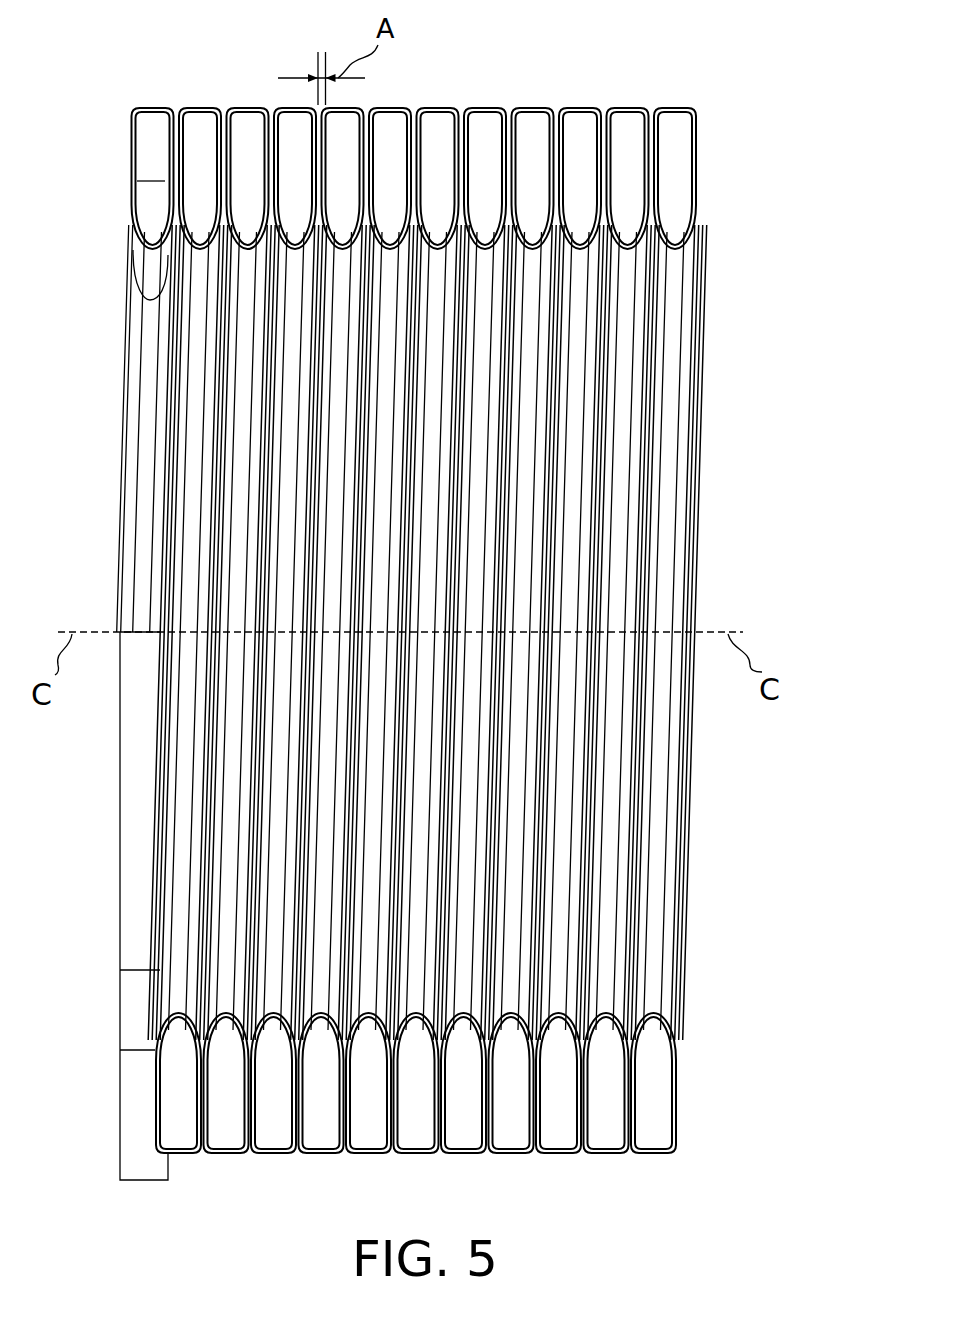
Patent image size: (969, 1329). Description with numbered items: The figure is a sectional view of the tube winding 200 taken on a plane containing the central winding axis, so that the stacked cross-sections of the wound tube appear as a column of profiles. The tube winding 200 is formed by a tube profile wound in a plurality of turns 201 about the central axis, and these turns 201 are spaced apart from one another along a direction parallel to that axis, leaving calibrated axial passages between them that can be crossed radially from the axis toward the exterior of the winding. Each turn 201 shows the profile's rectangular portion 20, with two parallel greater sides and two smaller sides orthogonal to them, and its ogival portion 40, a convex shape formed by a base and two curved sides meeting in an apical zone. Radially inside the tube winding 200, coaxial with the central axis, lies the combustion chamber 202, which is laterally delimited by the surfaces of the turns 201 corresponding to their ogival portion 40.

The rectangular portion 20 is at (700, 153).
The ogival portion 40 is at (697, 216).
The tube winding 200 is at (742, 180).
The turns 201 is at (672, 94).
The combustion chamber 202 is at (615, 452).